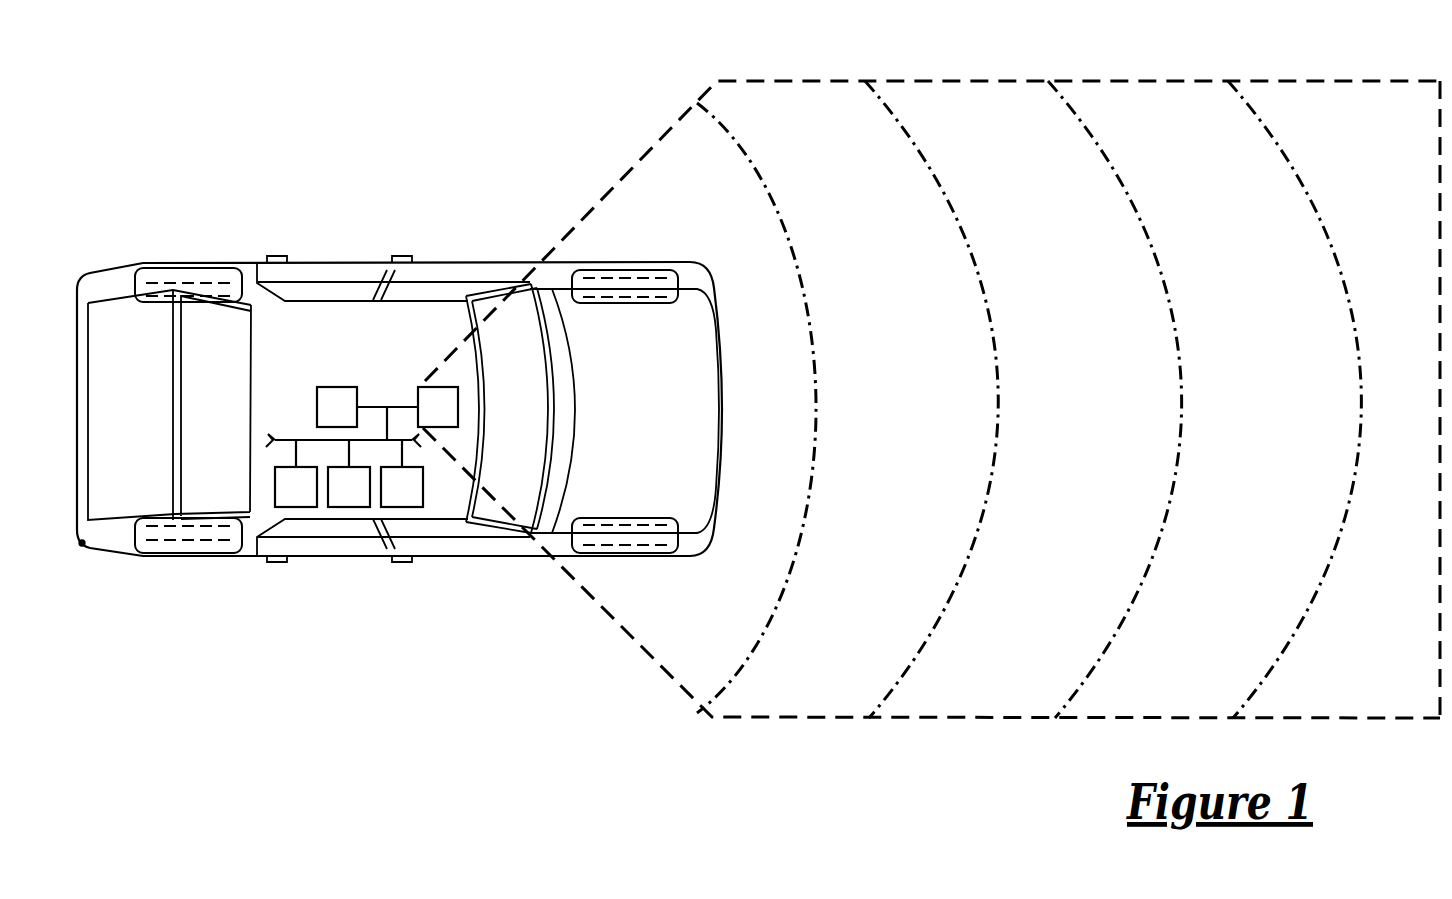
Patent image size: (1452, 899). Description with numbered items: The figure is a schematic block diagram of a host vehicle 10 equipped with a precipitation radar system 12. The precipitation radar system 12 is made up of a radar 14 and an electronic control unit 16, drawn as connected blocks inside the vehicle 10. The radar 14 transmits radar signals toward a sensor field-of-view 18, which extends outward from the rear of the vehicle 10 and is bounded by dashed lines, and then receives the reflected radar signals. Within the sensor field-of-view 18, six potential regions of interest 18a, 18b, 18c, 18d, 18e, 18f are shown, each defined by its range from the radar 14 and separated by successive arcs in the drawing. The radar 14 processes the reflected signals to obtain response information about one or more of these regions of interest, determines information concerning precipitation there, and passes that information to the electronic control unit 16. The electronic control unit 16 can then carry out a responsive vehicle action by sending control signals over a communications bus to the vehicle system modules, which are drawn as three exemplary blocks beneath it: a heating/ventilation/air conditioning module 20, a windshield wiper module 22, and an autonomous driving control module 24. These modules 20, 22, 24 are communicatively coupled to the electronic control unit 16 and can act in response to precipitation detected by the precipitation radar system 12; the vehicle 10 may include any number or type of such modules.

The vehicle 10 is at (460, 262).
The precipitation radar system 12 is at (378, 380).
The radar 14 is at (438, 407).
The electronic control unit 16 is at (337, 407).
The sensor field-of-view 18 is at (627, 168).
The region of interest 18a is at (605, 468).
The region of interest 18b is at (636, 614).
The region of interest 18c is at (765, 103).
The region of interest 18d is at (983, 102).
The region of interest 18e is at (1123, 102).
The region of interest 18f is at (1350, 102).
The heating/ventilation/air conditioning (HVAC) module 20 is at (296, 487).
The windshield wiper module 22 is at (349, 487).
The autonomous driving control module 24 is at (402, 487).